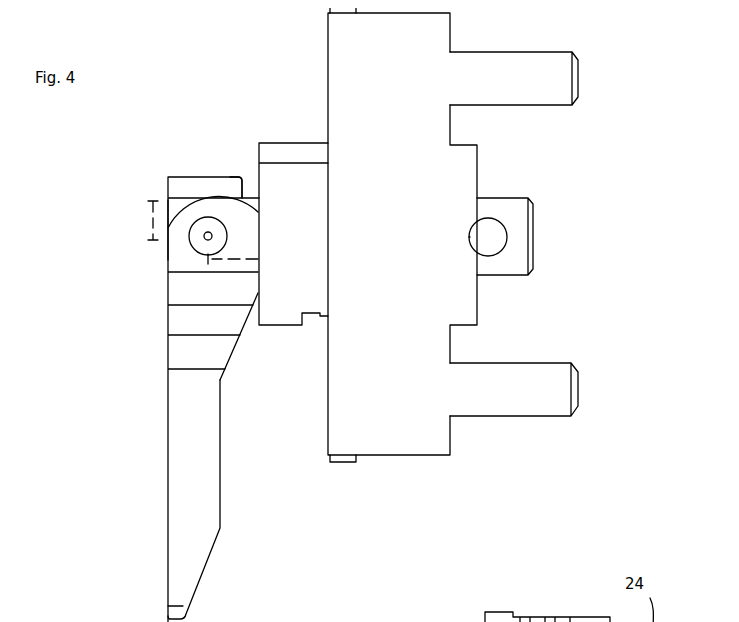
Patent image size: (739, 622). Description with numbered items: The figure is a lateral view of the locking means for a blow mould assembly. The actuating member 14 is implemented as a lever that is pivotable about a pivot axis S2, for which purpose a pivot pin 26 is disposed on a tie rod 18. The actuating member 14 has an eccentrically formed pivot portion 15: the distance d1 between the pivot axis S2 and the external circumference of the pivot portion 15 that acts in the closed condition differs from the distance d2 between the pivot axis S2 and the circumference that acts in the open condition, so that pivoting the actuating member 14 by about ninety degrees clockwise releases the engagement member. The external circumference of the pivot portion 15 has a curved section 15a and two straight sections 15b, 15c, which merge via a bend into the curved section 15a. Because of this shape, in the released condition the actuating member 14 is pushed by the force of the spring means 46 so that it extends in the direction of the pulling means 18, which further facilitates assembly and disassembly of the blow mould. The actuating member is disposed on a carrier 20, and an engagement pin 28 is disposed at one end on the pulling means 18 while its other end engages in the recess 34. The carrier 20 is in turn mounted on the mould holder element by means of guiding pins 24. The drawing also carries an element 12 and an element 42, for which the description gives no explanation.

The tool holder block 12 is at (296, 190).
The actuating member 14 is at (207, 492).
The pivot portion 15 is at (152, 270).
The curved section 15a is at (242, 192).
The straight section 15b is at (168, 248).
The straight section 15c is at (262, 240).
The tie rod 18 is at (518, 215).
The carrier 20 is at (398, 435).
The guiding pins 24 is at (543, 397).
The pivot pin 26 is at (192, 229).
The engagement pin 28 is at (488, 228).
The recess 34 is at (468, 238).
The pivot axis S2 is at (209, 233).
The distance d1 is at (143, 220).
The distance d2 is at (233, 270).
The element 42 is at (475, 621).
The spring means 46 is at (532, 621).